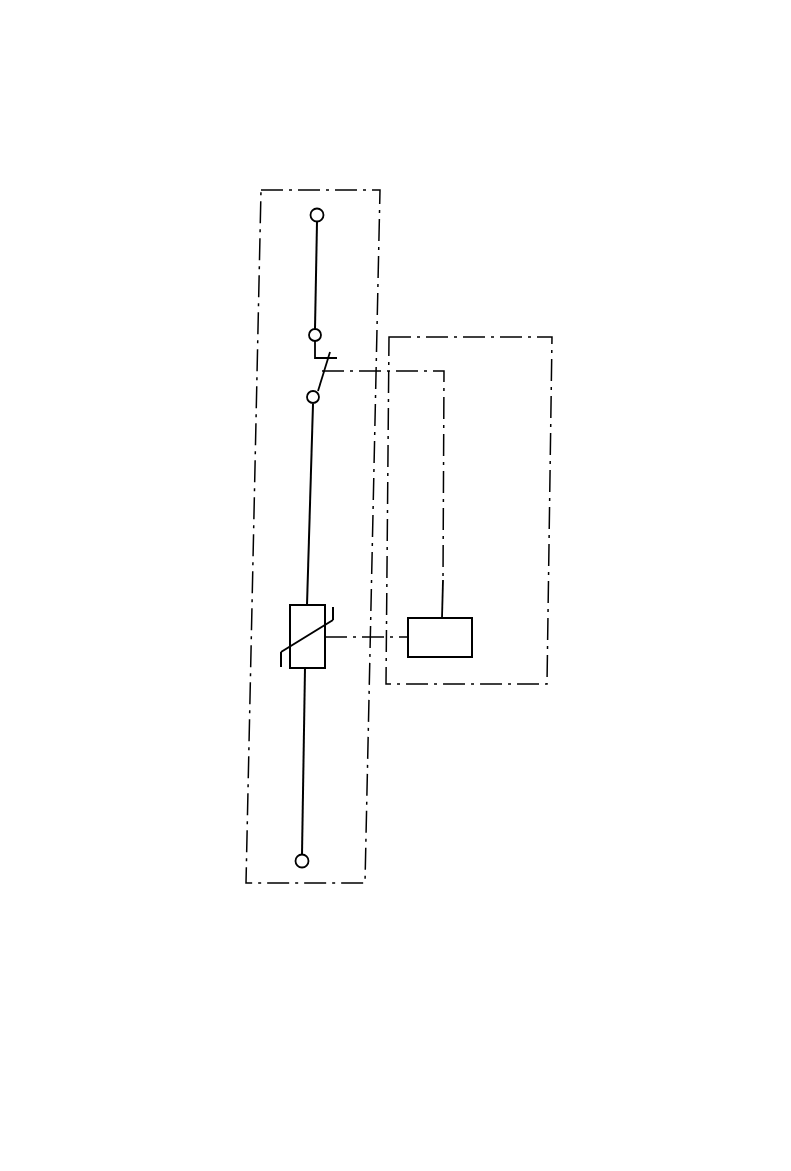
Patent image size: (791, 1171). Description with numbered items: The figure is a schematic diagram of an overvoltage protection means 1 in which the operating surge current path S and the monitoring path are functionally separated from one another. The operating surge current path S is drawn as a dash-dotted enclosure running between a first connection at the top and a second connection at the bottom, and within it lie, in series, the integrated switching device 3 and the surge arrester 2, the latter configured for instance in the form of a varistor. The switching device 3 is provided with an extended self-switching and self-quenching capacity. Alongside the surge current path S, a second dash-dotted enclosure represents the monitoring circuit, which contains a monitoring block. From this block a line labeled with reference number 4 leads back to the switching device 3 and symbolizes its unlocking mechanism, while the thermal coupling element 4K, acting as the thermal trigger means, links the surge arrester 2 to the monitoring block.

The overvoltage protection means 1 is at (235, 188).
The operating surge current path S is at (253, 278).
The switching device 3 is at (310, 368).
The surge arrester 2 is at (298, 627).
The unlocking mechanism 4 is at (442, 559).
The thermal coupling element 4K is at (333, 647).